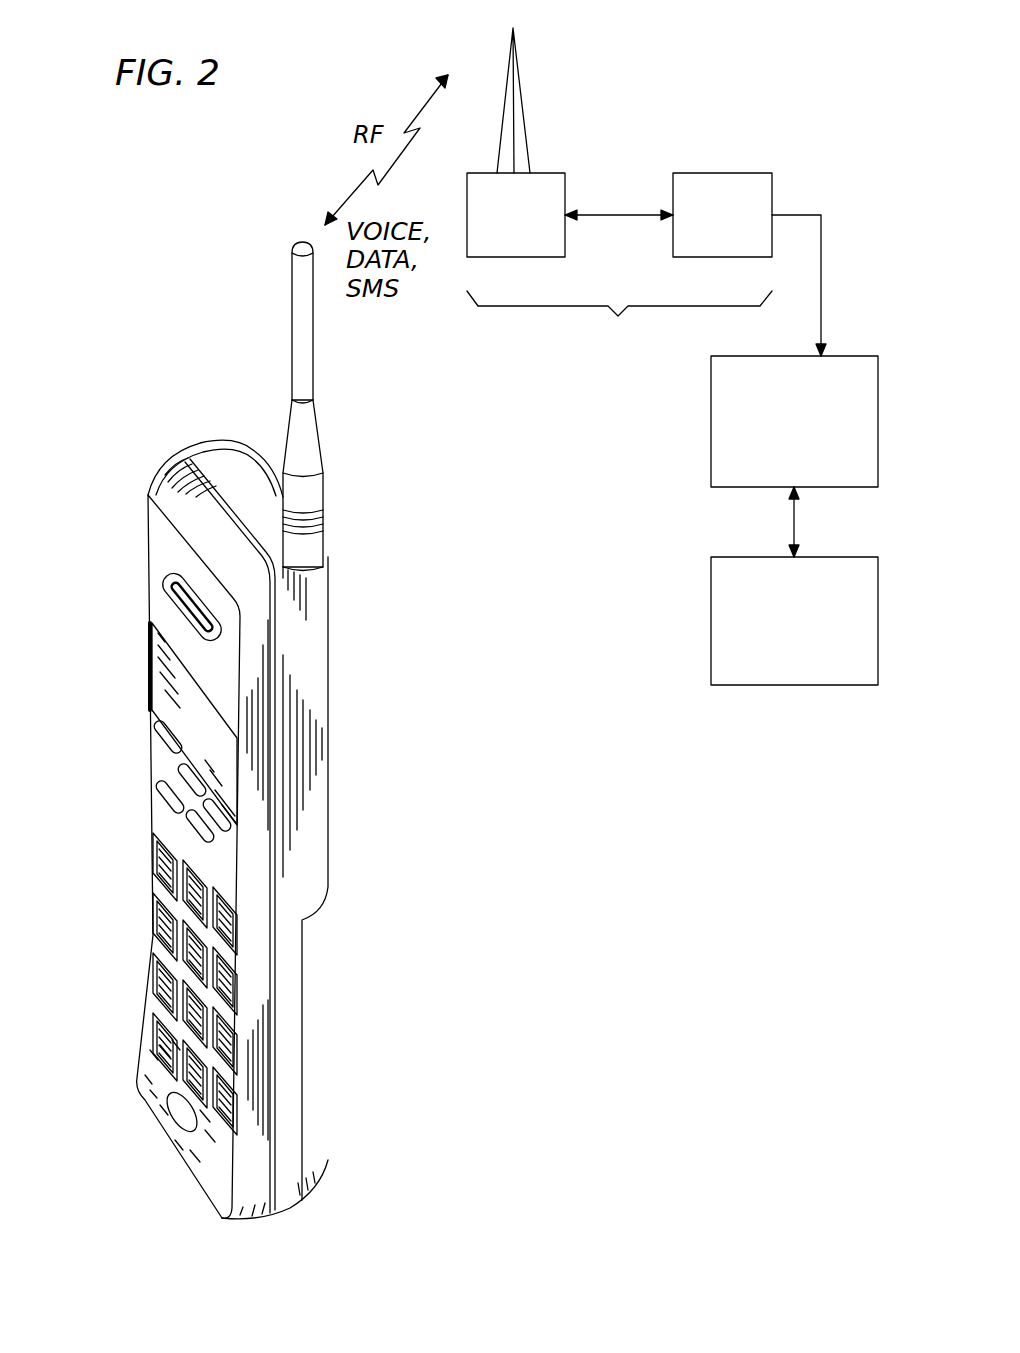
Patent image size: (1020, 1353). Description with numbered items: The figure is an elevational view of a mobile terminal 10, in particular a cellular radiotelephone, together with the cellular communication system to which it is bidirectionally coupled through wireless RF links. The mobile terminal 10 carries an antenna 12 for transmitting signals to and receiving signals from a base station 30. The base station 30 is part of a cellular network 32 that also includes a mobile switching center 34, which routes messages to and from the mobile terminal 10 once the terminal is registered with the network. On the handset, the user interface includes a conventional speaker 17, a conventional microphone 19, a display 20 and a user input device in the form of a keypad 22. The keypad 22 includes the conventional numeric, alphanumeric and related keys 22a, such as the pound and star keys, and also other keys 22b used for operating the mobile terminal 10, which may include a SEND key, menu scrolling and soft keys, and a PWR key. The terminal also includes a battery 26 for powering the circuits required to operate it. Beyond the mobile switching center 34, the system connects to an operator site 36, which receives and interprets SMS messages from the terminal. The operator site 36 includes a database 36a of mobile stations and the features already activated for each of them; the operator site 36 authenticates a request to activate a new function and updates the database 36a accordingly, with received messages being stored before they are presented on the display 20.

The mobile terminal 10 is at (366, 655).
The antenna 12 is at (300, 373).
The speaker 17 is at (188, 592).
The microphone 19 is at (170, 1118).
The display 20 is at (173, 700).
The keypad 22 is at (210, 927).
The numeric, alphanumeric and related keys 22a is at (157, 935).
The other keys 22b is at (168, 797).
The battery 26 is at (315, 1068).
The base station 30 is at (506, 258).
The cellular network 32 is at (619, 336).
The mobile switching center 34 is at (695, 258).
The operator site 36 is at (724, 488).
The database 36a is at (726, 687).